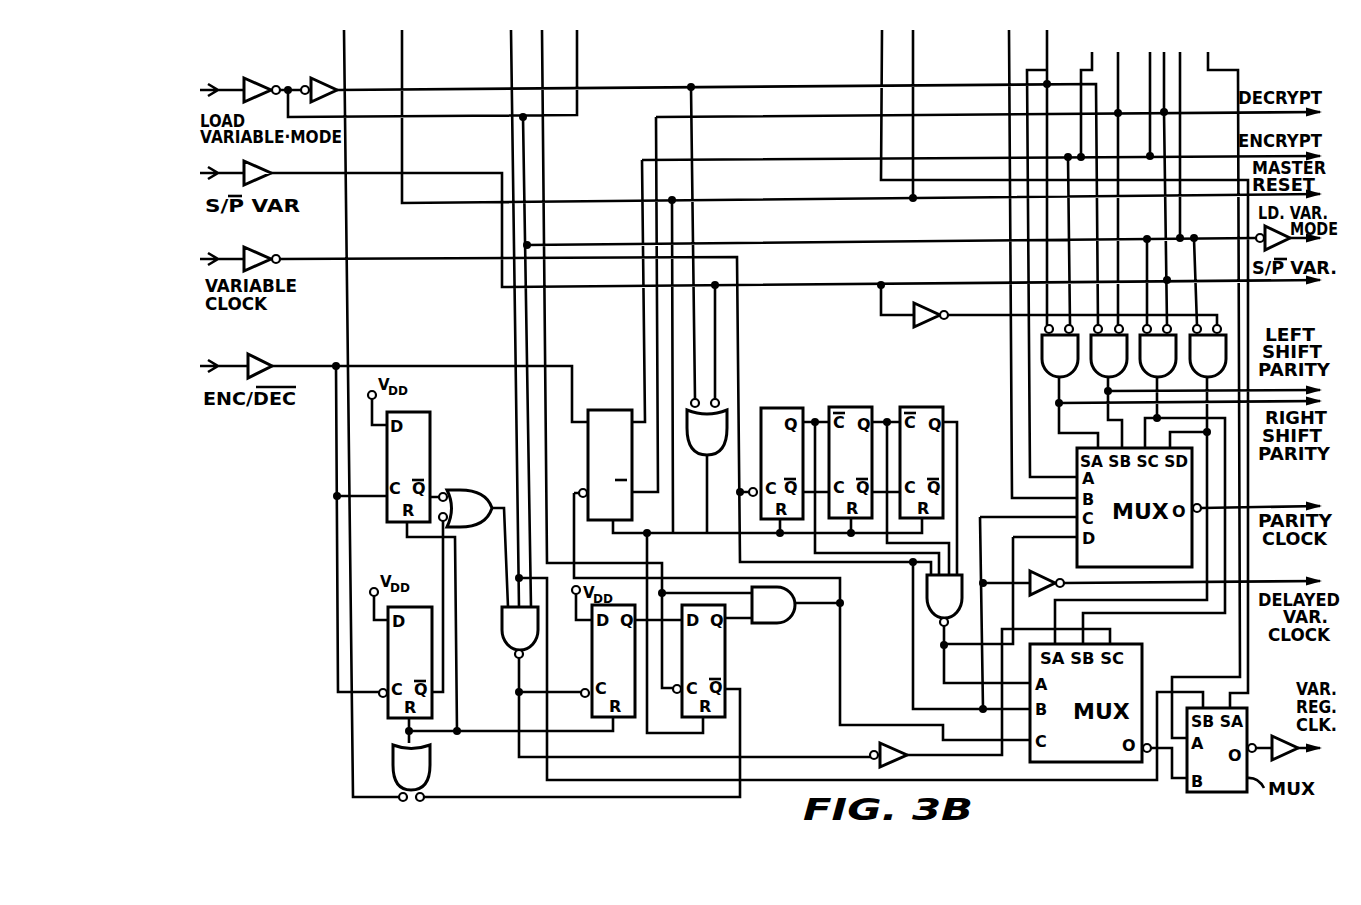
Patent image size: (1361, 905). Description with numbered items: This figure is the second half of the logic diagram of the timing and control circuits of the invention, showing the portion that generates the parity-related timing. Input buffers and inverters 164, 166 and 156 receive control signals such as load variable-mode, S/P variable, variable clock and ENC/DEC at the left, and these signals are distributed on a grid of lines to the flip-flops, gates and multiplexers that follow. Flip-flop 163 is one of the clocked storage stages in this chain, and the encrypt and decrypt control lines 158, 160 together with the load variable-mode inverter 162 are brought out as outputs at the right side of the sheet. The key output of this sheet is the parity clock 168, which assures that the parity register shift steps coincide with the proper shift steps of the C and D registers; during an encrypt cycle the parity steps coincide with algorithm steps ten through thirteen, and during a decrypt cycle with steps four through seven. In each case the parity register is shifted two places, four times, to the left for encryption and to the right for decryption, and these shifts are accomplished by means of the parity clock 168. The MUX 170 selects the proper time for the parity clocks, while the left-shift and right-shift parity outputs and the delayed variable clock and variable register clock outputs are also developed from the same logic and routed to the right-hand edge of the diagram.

The ENC/DEC input buffer 156 is at (222, 366).
The encrypt output line 158 is at (1152, 138).
The decrypt output line 160 is at (1166, 90).
The load variable mode inverter 162 is at (1184, 217).
The D flip-flop 163 is at (593, 410).
The load variable mode input inverter 164 is at (244, 72).
The inverter 166 is at (308, 72).
The parity clock 168 is at (1276, 506).
The MUX 170 is at (1072, 568).